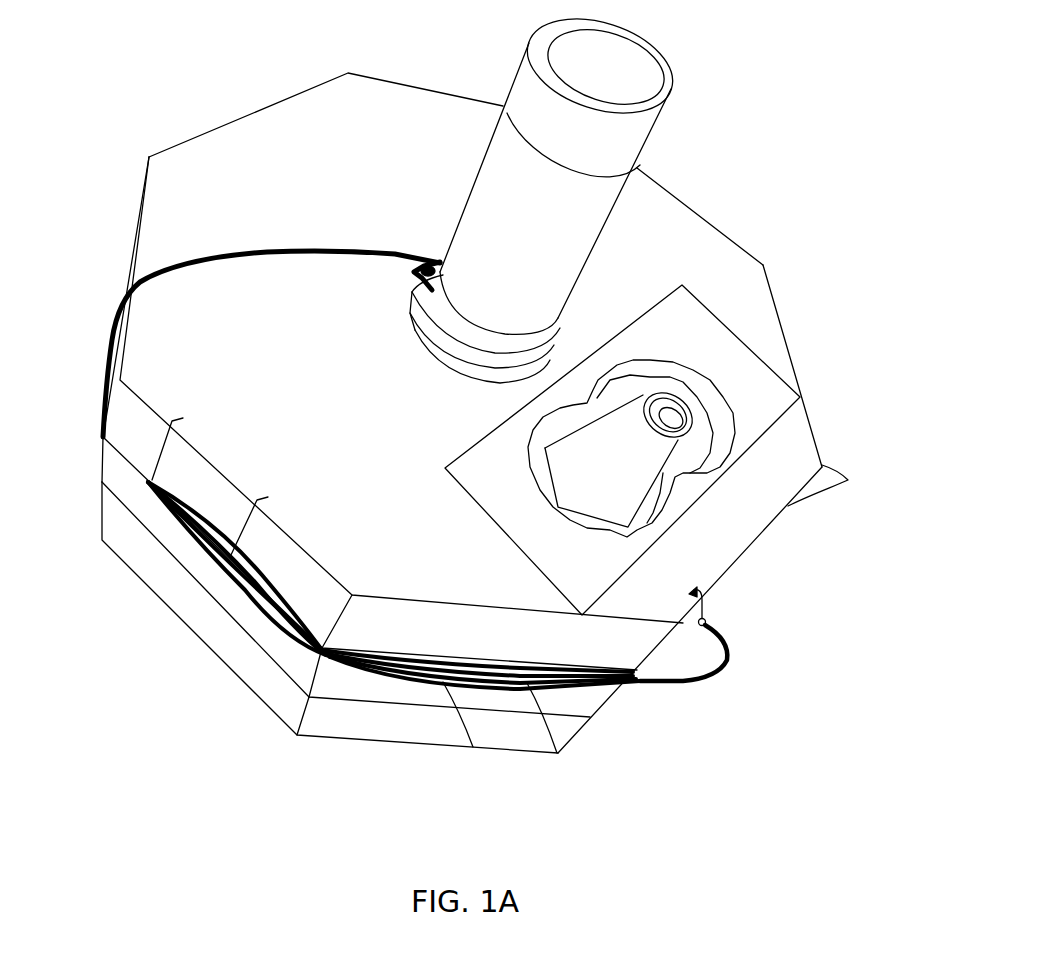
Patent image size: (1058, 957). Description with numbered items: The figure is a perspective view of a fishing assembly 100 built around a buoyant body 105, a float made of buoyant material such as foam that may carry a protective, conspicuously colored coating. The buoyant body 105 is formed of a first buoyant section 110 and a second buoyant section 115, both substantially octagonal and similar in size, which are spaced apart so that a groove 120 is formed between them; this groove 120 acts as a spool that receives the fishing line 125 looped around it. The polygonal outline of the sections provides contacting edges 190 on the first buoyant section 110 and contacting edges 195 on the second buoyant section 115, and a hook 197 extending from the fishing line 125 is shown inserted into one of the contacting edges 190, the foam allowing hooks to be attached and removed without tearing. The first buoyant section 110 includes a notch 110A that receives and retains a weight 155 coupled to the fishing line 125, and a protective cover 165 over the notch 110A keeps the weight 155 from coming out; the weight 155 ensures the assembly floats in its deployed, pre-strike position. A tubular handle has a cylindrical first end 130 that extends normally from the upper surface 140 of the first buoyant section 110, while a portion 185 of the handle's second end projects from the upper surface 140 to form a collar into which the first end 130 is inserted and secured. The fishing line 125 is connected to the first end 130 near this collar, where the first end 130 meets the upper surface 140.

The fishing assembly 100 is at (698, 72).
The buoyant body 105 is at (752, 268).
The first buoyant section 110 is at (215, 167).
The notch 110A is at (655, 368).
The second buoyant section 115 is at (600, 703).
The groove 120 is at (559, 754).
The fishing line 125 is at (471, 748).
The first end 130 is at (497, 128).
The upper surface 140 is at (318, 372).
The weight 155 is at (623, 498).
The protective cover 165 is at (735, 348).
The portion 185 is at (440, 262).
The contacting edges 190 is at (848, 480).
The contacting edges 195 is at (660, 640).
The hook 197 is at (712, 598).